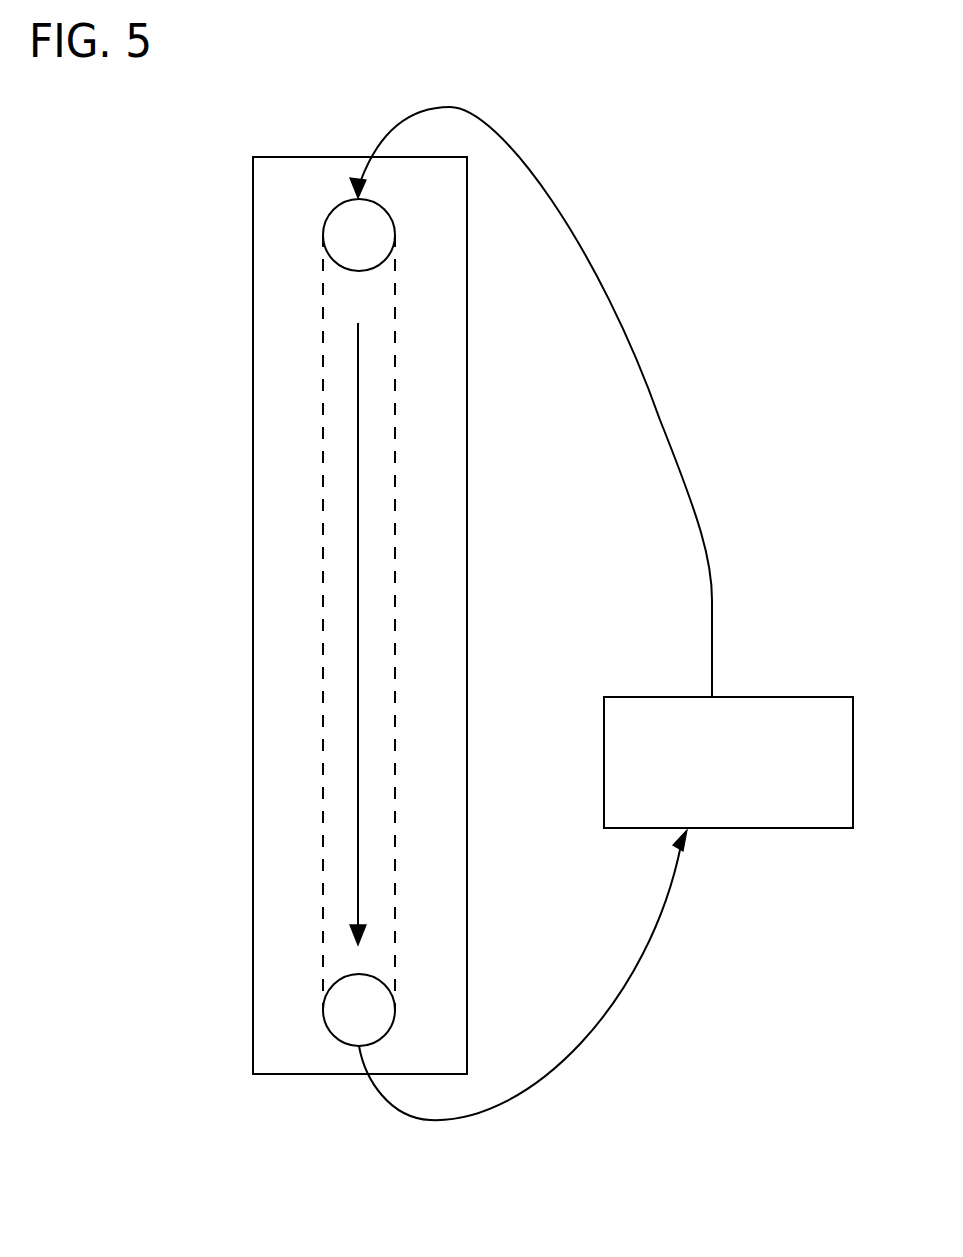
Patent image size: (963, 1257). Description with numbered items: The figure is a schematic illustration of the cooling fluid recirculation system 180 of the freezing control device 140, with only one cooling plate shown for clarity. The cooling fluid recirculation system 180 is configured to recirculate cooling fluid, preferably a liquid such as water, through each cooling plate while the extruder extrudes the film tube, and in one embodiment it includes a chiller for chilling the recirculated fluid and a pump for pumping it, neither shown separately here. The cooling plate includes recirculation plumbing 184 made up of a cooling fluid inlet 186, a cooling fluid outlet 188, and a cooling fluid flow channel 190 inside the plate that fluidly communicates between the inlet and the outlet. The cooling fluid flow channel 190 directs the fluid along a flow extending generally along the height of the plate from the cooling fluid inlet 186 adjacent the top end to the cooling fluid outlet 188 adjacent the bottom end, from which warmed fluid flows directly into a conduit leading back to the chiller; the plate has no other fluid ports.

The freezing control device 140 is at (258, 1108).
The cooling fluid recirculation system 180 is at (763, 700).
The recirculation plumbing 184 is at (396, 475).
The cooling fluid inlet 186 is at (340, 212).
The cooling fluid outlet 188 is at (328, 1015).
The cooling fluid flow channel 190 is at (333, 415).